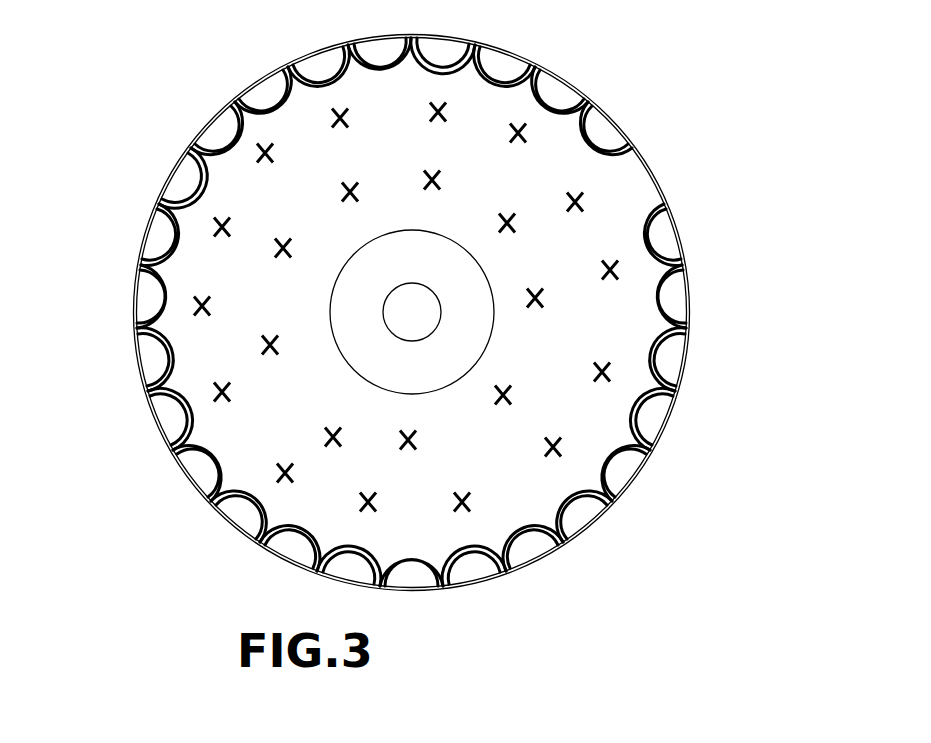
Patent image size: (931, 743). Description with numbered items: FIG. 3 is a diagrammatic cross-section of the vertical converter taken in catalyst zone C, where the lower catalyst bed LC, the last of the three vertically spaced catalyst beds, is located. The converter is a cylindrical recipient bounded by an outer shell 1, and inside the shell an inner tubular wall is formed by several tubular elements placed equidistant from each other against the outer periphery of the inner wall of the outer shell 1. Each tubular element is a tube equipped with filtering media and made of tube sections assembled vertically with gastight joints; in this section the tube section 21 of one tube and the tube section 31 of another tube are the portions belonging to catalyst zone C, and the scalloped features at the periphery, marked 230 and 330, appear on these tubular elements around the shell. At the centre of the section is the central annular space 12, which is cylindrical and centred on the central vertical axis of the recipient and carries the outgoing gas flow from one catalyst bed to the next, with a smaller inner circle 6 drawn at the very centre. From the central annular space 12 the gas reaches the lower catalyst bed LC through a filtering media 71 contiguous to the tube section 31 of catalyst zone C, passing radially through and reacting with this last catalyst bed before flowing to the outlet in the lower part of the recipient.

The outer shell 1 is at (405, 591).
The central opening 6 is at (415, 315).
The central annular space 12 is at (460, 325).
The tube section 21 is at (675, 300).
The tube section 31 is at (150, 300).
The filtering media 71 is at (497, 313).
The reflector cup 230 is at (273, 80).
The lens element 330 is at (195, 140).
The lower catalyst bed LC is at (231, 433).